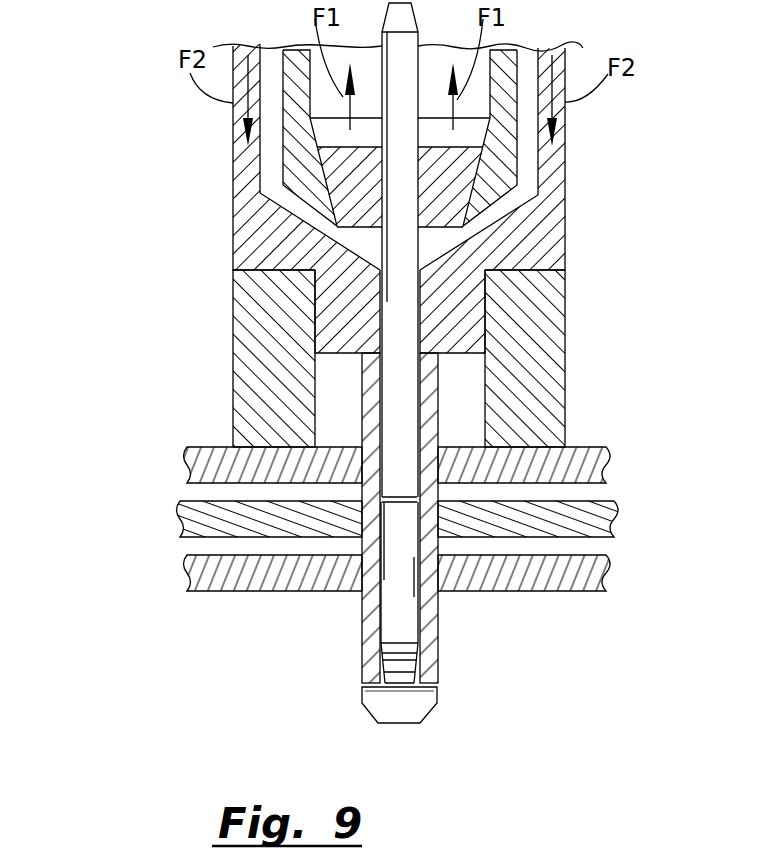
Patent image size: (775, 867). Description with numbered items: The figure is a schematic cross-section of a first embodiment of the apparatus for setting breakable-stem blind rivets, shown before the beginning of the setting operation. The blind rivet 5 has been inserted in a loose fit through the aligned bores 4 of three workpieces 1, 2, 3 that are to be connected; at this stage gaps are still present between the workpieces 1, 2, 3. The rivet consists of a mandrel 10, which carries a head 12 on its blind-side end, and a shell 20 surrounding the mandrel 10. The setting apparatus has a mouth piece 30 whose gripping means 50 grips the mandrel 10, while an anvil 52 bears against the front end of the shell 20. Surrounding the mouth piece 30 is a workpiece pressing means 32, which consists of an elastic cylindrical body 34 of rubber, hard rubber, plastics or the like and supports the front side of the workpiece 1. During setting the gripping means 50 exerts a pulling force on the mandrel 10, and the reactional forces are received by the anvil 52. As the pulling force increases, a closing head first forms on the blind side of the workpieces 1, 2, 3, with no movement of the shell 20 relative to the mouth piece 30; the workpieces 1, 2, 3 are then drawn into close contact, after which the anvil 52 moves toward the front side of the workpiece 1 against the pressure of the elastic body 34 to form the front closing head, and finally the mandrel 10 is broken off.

The workpiece 1 is at (608, 463).
The workpiece 2 is at (612, 521).
The workpiece 3 is at (597, 570).
The aligned bores 4 is at (396, 514).
The blind rivet 5 is at (394, 377).
The mandrel 10 is at (417, 412).
The head 12 is at (440, 703).
The shell 20 is at (456, 627).
The mouth piece 30 is at (442, 198).
The workpiece pressing means 32 is at (470, 358).
The elastic cylindrical body 34 is at (553, 390).
The gripping means 50 is at (450, 205).
The anvil 52 is at (465, 325).